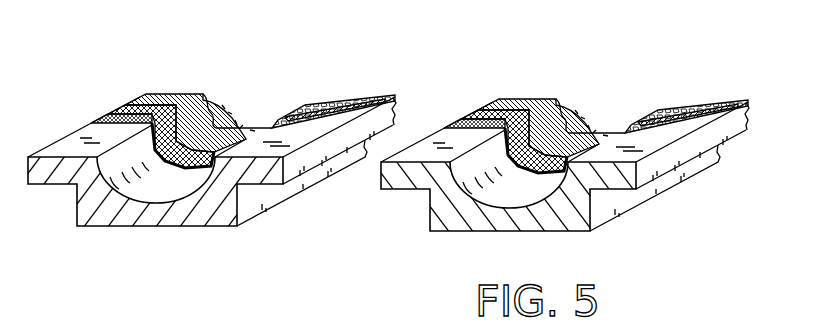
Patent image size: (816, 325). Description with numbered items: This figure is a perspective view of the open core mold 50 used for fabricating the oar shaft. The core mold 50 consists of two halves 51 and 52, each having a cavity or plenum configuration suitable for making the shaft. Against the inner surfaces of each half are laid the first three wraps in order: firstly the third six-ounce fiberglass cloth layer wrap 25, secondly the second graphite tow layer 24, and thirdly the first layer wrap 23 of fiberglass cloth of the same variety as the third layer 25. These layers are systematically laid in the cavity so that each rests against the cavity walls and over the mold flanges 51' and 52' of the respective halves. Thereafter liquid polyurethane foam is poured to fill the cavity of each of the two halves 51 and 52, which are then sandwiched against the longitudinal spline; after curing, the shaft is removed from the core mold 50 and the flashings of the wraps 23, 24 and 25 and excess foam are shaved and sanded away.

The first layer wrap 23 is at (185, 100).
The second graphite tow layer 24 is at (137, 108).
The third fiberglass cloth layer wrap 25 is at (103, 120).
The core mold 50 is at (178, 270).
The mold half 51 is at (547, 177).
The mold flange 51' is at (564, 169).
The mold half 52 is at (166, 185).
The mold flange 52' is at (211, 167).